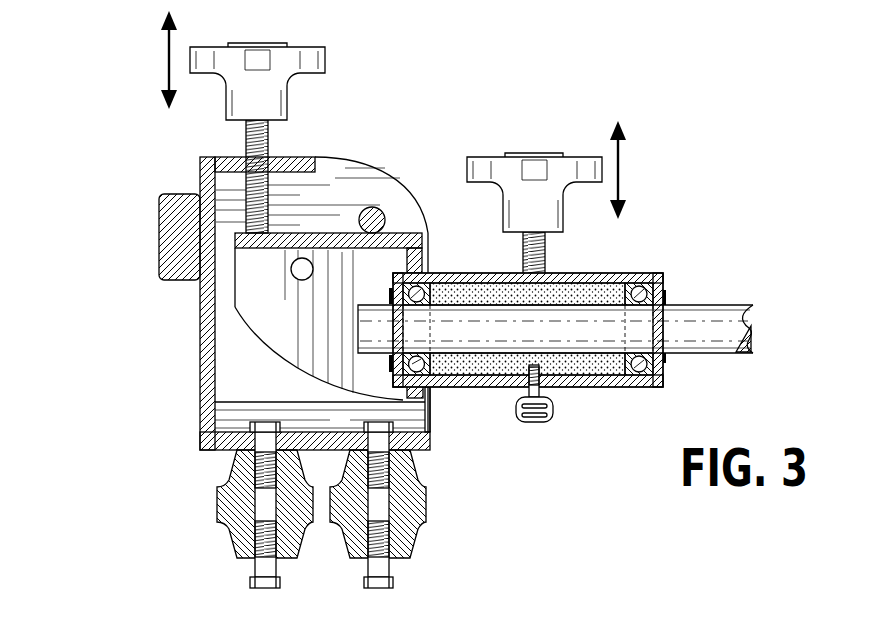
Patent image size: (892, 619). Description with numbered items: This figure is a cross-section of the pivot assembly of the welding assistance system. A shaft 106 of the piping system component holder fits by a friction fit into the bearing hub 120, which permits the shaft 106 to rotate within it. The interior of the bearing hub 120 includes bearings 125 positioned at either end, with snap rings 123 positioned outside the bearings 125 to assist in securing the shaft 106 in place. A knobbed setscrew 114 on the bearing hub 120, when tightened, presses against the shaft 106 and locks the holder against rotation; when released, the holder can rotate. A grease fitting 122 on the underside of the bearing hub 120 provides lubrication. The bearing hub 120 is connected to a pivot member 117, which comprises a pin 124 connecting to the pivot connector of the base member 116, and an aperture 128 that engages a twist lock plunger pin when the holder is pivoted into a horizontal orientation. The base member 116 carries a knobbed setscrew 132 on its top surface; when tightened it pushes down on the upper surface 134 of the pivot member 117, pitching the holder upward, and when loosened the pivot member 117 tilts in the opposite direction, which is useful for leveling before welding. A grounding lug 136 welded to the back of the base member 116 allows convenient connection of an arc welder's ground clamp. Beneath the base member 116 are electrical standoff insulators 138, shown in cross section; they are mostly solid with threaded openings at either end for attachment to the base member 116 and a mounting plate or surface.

The shaft 106 is at (697, 347).
The knobbed setscrew 114 is at (548, 153).
The base member 116 is at (200, 397).
The pivot member 117 is at (430, 397).
The bearing hub 120 is at (616, 273).
The grease fitting 122 is at (533, 424).
The snap rings 123 is at (390, 297).
The pin 124 is at (373, 207).
The bearings 125 is at (430, 287).
The aperture 128 is at (291, 270).
The knobbed setscrew 132 is at (278, 45).
The upper surface 134 is at (311, 233).
The grounding lug 136 is at (160, 243).
The electrical standoff insulators 138 is at (408, 533).